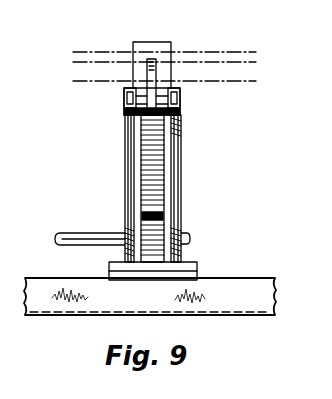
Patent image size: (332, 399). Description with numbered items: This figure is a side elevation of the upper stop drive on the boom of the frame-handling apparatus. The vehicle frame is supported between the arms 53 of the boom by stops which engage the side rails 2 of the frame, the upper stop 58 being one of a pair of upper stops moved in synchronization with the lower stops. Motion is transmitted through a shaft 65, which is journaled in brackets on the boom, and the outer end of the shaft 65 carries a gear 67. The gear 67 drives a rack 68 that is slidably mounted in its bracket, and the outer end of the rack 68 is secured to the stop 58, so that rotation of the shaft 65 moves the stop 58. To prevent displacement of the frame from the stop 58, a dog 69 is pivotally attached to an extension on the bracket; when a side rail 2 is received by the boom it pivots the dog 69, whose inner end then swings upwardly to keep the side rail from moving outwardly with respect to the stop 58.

The side rails 2 is at (243, 78).
The upper stops 58 is at (171, 46).
The dog 69 is at (156, 70).
The rack 68 is at (164, 171).
The gear 67 is at (161, 222).
The shaft 65 is at (85, 238).
The arms 53 is at (233, 288).